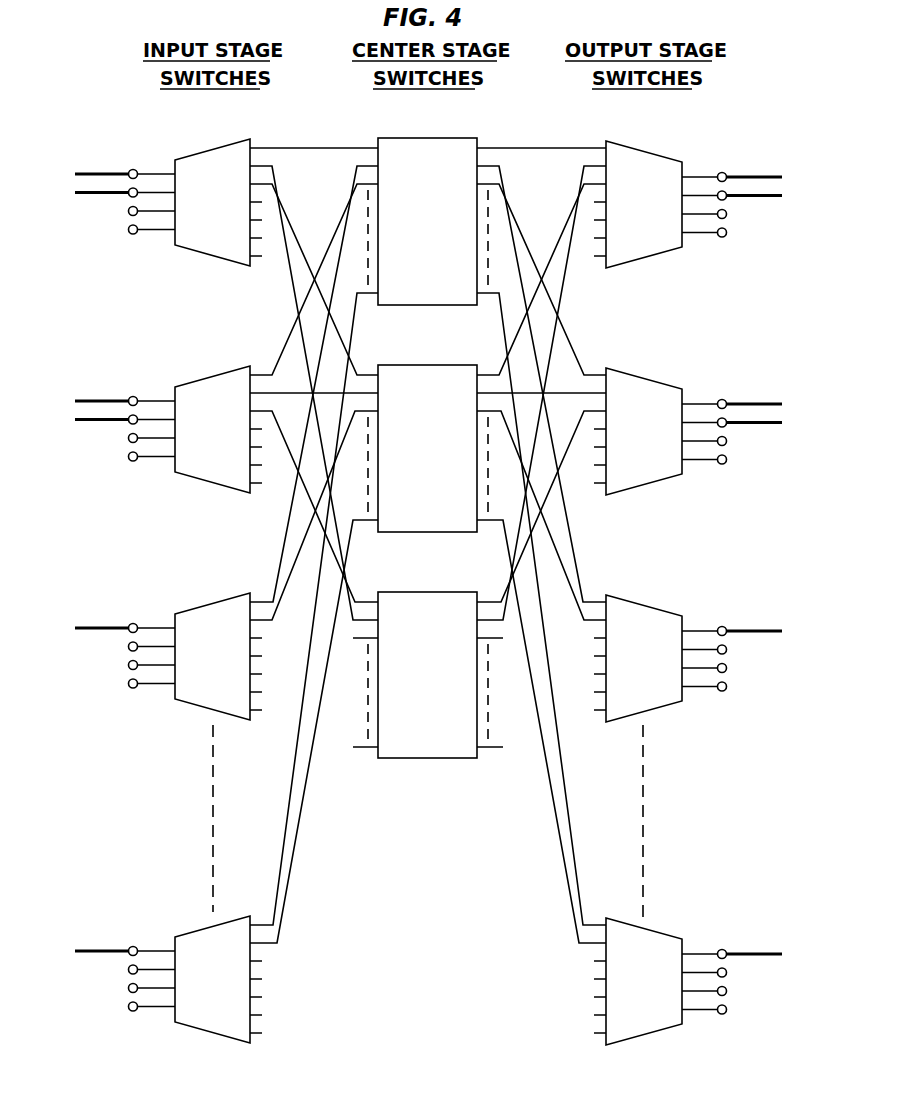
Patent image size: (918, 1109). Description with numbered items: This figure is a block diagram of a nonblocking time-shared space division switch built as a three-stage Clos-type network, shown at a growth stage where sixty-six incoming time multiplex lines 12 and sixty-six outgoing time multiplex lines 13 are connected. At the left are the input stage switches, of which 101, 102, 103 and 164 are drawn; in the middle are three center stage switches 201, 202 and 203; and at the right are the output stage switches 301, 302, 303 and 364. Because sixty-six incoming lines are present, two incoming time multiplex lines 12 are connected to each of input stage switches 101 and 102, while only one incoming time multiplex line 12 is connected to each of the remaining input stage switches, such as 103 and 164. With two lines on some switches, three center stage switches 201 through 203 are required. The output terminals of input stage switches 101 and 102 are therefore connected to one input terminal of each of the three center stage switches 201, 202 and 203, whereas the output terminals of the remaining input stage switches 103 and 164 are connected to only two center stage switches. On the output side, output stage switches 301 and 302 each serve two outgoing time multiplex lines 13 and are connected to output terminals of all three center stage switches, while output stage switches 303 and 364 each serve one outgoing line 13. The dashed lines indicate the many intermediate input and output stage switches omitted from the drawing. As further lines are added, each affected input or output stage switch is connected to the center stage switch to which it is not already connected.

The incoming time multiplex lines 12 is at (118, 188).
The outgoing time multiplex lines 13 is at (736, 190).
The input stage switch 101 is at (204, 152).
The input stage switch 102 is at (204, 379).
The input stage switch 103 is at (210, 606).
The input stage switch 164 is at (208, 929).
The center stage switch 201 is at (424, 140).
The center stage switch 202 is at (424, 367).
The center stage switch 203 is at (424, 594).
The output stage switch 301 is at (650, 158).
The output stage switch 302 is at (650, 385).
The output stage switch 303 is at (650, 612).
The output stage switch 364 is at (654, 934).